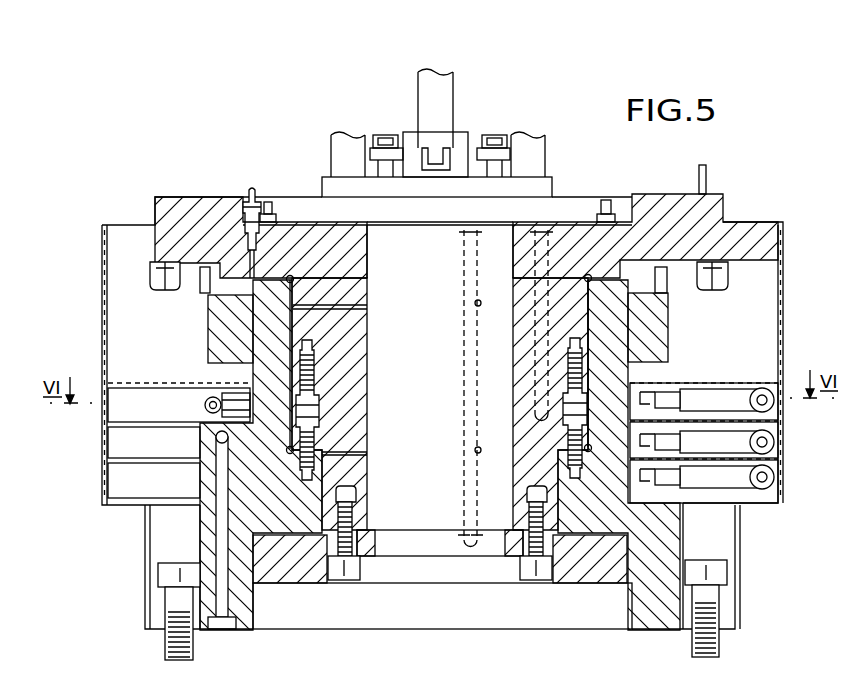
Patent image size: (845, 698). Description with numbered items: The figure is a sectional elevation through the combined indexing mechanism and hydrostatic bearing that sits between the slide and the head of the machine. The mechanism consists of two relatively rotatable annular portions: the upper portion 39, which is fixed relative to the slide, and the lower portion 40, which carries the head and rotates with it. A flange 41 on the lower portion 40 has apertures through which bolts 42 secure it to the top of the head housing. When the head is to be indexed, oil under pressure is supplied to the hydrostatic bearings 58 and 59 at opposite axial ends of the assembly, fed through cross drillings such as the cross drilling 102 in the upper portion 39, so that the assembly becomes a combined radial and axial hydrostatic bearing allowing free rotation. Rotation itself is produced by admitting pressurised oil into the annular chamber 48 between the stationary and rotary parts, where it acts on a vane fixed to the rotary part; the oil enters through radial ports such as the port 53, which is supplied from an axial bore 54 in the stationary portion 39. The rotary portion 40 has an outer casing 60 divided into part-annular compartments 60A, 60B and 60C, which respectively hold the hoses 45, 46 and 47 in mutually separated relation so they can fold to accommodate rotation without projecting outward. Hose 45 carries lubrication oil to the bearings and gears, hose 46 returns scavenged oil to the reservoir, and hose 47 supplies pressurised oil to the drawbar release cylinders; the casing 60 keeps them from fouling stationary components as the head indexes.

The upper portion 39 is at (695, 217).
The hydrostatic bearing 58 is at (240, 262).
The cross drilling 102 is at (345, 318).
The annular chamber 48 is at (316, 404).
The axial bore 54 is at (535, 333).
The port 53 is at (562, 401).
The outer casing 60 is at (781, 327).
The part-annular compartment 60A is at (179, 402).
The part-annular compartment 60B is at (154, 442).
The part-annular compartment 60C is at (154, 480).
The hose 47 is at (788, 393).
The hose 46 is at (775, 444).
The hose 45 is at (778, 482).
The hydrostatic bearing 59 is at (290, 537).
The lower portion 40 is at (657, 615).
The flange 41 is at (730, 604).
The bolts 42 is at (719, 647).